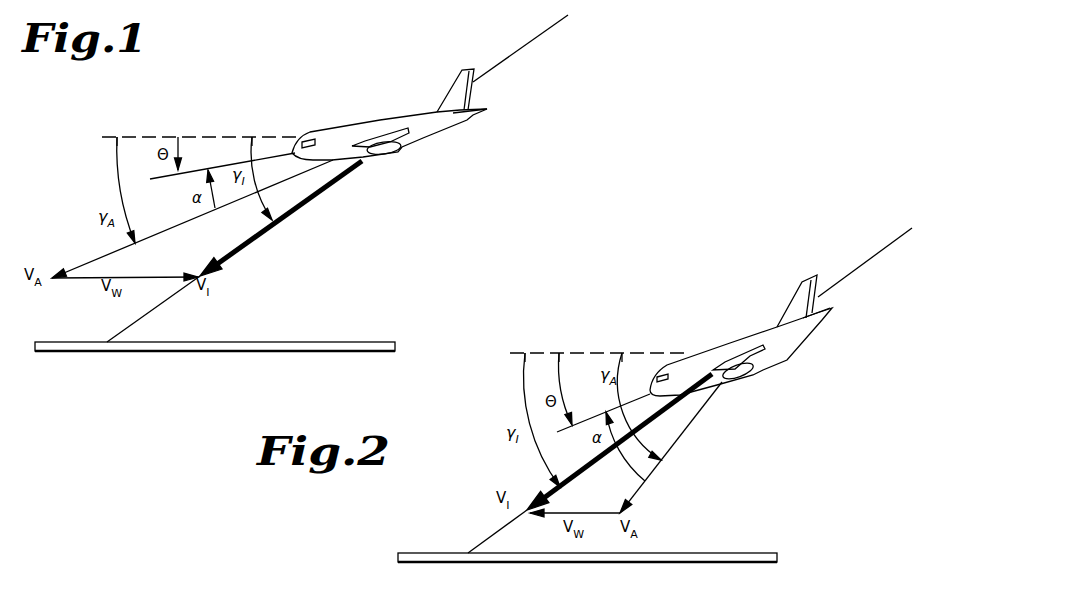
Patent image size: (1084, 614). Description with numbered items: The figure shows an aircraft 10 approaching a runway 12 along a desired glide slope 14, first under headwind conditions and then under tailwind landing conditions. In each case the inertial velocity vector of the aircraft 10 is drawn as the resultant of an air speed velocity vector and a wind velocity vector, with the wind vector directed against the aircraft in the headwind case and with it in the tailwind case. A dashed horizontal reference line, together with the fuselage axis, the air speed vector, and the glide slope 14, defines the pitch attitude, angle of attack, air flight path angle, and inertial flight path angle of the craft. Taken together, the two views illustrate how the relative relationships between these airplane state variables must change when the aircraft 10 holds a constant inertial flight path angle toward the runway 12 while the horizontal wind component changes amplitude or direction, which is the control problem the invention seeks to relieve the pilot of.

In FIG. 1, the aircraft 10 is at (377, 122).
In FIG. 2, the aircraft 10 is at (727, 335).
In FIG. 1, the runway 12 is at (213, 342).
In FIG. 2, the runway 12 is at (673, 553).
In FIG. 1, the glide slope 14 is at (498, 63).
In FIG. 2, the glide slope 14 is at (835, 285).